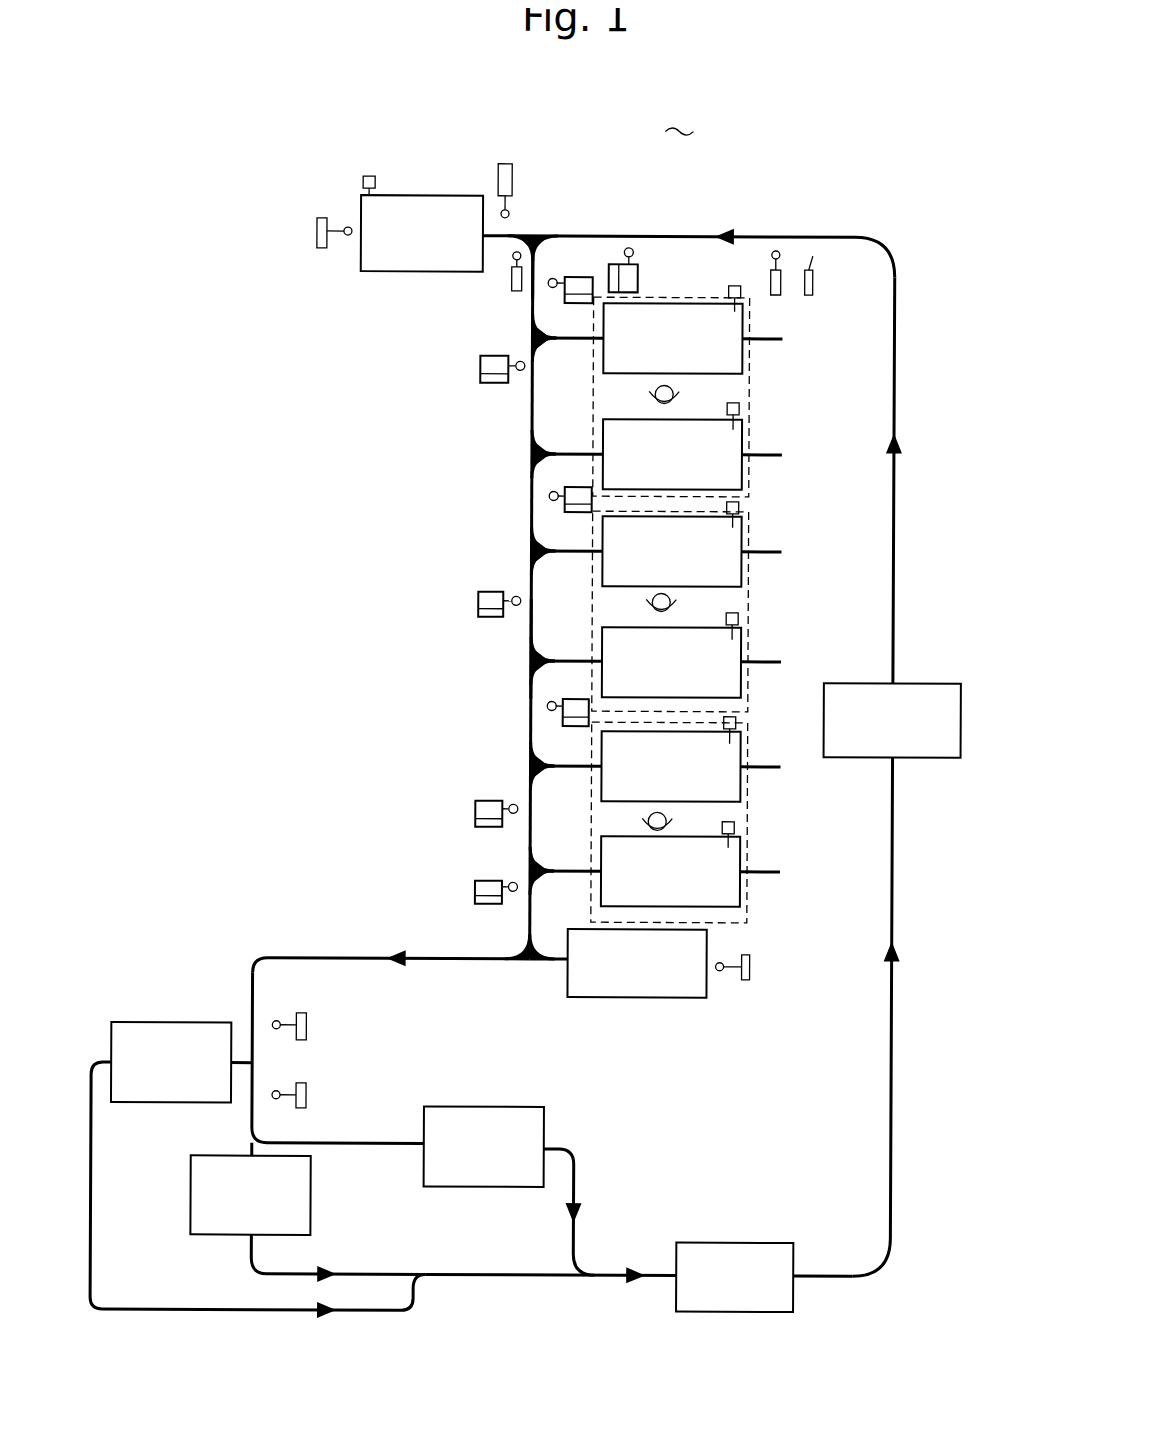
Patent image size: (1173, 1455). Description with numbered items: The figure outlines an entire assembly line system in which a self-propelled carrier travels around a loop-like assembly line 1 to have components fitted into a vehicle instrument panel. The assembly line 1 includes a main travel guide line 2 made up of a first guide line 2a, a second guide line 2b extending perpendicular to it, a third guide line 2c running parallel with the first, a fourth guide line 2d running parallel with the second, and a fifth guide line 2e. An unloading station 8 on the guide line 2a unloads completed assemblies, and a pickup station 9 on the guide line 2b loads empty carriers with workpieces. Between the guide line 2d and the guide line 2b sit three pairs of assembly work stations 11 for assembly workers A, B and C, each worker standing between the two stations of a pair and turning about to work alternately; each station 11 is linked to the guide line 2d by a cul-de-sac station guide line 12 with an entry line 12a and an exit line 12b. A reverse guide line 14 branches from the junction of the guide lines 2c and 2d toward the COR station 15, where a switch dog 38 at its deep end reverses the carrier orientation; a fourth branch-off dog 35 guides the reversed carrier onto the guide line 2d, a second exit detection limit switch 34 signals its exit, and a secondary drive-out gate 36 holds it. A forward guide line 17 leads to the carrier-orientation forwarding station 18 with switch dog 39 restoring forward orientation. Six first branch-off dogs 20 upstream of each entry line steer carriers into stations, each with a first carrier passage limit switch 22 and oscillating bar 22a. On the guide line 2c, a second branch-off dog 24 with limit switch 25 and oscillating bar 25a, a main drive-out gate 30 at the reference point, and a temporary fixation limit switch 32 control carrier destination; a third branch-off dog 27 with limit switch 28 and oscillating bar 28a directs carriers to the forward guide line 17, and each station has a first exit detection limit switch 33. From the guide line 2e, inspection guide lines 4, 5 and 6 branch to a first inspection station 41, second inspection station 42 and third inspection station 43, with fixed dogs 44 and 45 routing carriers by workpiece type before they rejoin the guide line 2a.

The assembly line 1 is at (679, 114).
The main travel guide line 2 is at (902, 292).
The first guide line 2a is at (653, 1279).
The second guide line 2b is at (895, 572).
The third guide line 2c is at (755, 236).
The fourth guide line 2d is at (528, 636).
The fifth guide line 2e is at (348, 962).
The inspection guide line 4 is at (93, 1166).
The inspection guide line 5 is at (380, 1145).
The inspection guide line 6 is at (373, 1275).
The unloading station 8 is at (742, 1243).
The pickup station 9 is at (930, 758).
The assembly work station 11 is at (742, 360).
The station guide line 12 is at (564, 370).
The entry line 12a is at (528, 450).
The exit line 12b is at (528, 462).
The reverse guide line 14 is at (524, 235).
The COR station 15 is at (432, 197).
The forward guide line 17 is at (548, 965).
The carrier-orientation forwarding station 18 is at (628, 999).
The first branch-off dog 20 is at (552, 279).
The first carrier passage limit switch 22 is at (577, 305).
The oscillating bar 22a is at (546, 298).
The second branch-off dog 24 is at (630, 253).
The second carrier passage limit switch 25 is at (604, 275).
The oscillating bar 25a is at (613, 277).
The third branch-off dog 27 is at (513, 884).
The third carrier passage limit switch 28 is at (475, 893).
The oscillating bar 28a is at (505, 906).
The main drive-out gate 30 is at (776, 252).
The temporary fixation limit switch 32 is at (812, 280).
The first exit detection limit switch 33 is at (727, 290).
The second exit detection limit switch 34 is at (364, 180).
The fourth branch-off dog 35 is at (512, 278).
The secondary drive-out gate 36 is at (500, 212).
The switch dog 38 is at (317, 234).
The switch dog 39 is at (752, 968).
The first inspection station 41 is at (165, 1025).
The second inspection station 42 is at (546, 1122).
The third inspection station 43 is at (207, 1238).
The first fixed dog 44 is at (307, 1027).
The second fixed dog 45 is at (307, 1097).
The assembly worker A is at (672, 393).
The assembly worker B is at (670, 601).
The assembly worker C is at (668, 819).